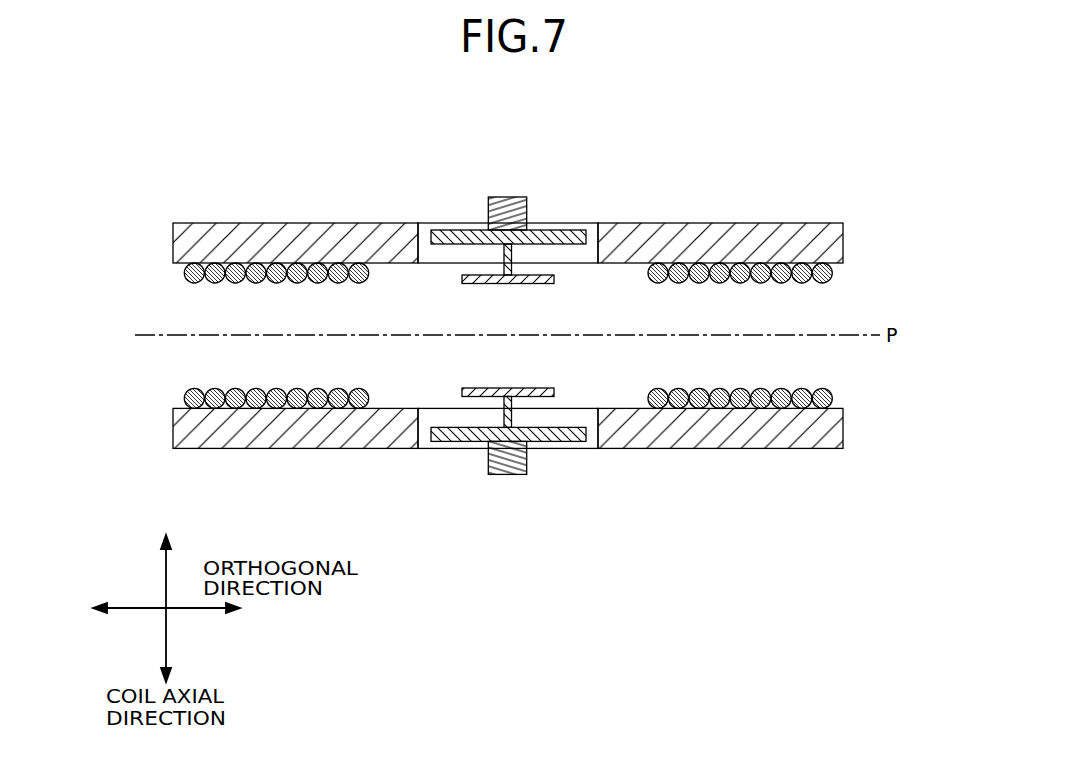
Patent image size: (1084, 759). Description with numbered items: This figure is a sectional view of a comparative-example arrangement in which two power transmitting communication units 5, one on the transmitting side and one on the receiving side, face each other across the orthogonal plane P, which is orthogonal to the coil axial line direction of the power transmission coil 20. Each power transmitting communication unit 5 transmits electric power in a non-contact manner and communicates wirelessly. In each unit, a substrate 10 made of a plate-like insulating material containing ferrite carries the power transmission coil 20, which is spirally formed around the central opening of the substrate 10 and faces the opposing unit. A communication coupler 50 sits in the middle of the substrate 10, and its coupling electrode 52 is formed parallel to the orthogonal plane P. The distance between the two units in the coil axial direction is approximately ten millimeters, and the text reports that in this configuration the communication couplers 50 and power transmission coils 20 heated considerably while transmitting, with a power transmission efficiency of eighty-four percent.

The power transmitting communication unit 5 is at (508, 336).
The substrate 10 is at (218, 222).
The power transmission coil 20 is at (193, 283).
The communication coupler 50 is at (536, 226).
The coupling electrode 52 is at (478, 285).